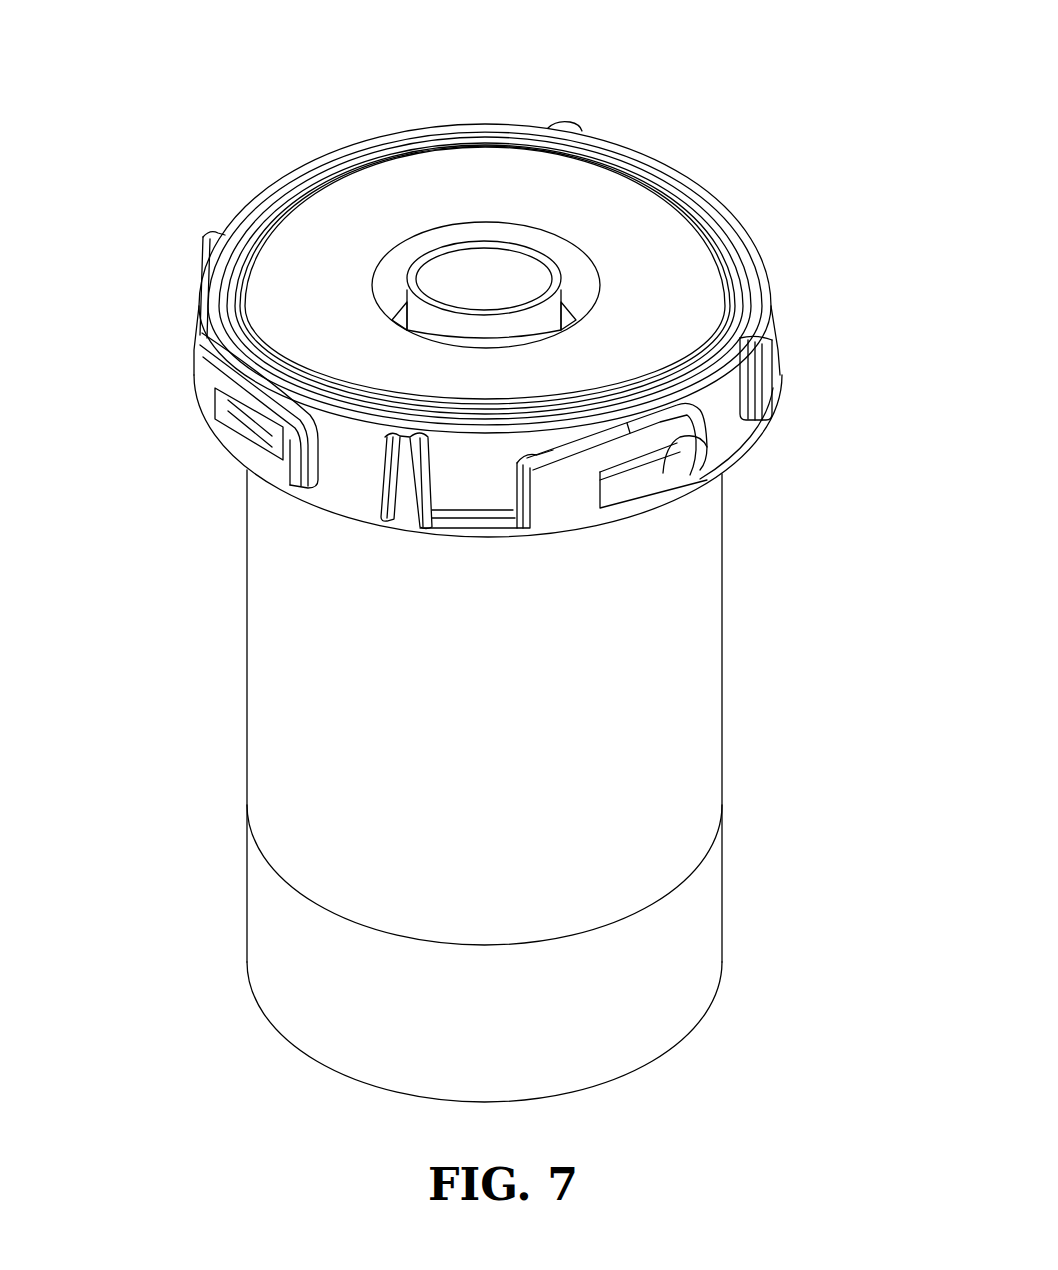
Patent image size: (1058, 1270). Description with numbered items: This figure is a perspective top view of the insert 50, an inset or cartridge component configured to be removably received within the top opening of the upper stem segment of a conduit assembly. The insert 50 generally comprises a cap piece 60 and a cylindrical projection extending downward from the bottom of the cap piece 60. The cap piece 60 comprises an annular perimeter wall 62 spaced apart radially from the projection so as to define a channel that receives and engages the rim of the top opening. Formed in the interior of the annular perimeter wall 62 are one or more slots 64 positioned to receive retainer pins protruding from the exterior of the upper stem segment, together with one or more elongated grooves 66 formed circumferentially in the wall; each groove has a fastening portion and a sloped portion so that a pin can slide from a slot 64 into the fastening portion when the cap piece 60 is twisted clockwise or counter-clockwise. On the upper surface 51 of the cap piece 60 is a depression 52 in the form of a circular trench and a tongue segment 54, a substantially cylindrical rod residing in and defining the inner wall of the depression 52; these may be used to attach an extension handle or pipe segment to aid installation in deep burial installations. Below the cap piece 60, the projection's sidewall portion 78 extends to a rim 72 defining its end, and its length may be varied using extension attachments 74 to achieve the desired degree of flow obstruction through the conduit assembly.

The insert 50 is at (122, 142).
The upper surface 51 is at (297, 258).
The depression 52 is at (558, 257).
The tongue segment 54 is at (460, 263).
The cap piece 60 is at (749, 220).
The annular perimeter wall 62 is at (770, 338).
The slot 64 is at (566, 542).
The elongated groove 66 is at (670, 468).
The rim 72 is at (667, 1053).
The extension attachment 74 is at (683, 934).
The sidewall portion 78 is at (247, 727).